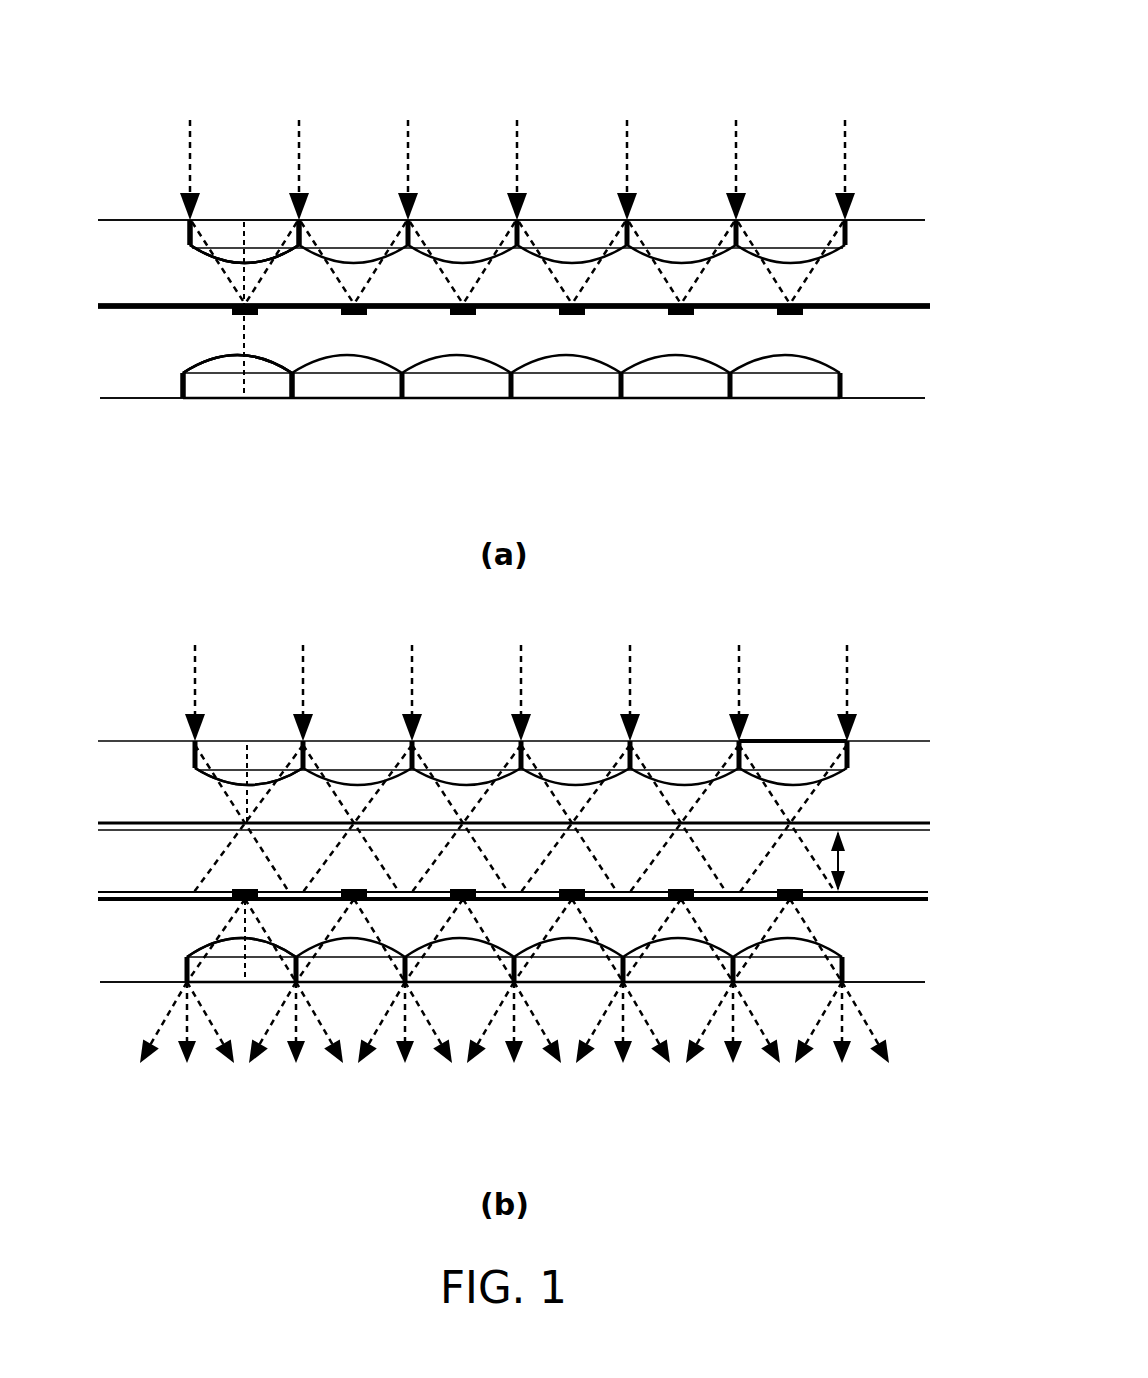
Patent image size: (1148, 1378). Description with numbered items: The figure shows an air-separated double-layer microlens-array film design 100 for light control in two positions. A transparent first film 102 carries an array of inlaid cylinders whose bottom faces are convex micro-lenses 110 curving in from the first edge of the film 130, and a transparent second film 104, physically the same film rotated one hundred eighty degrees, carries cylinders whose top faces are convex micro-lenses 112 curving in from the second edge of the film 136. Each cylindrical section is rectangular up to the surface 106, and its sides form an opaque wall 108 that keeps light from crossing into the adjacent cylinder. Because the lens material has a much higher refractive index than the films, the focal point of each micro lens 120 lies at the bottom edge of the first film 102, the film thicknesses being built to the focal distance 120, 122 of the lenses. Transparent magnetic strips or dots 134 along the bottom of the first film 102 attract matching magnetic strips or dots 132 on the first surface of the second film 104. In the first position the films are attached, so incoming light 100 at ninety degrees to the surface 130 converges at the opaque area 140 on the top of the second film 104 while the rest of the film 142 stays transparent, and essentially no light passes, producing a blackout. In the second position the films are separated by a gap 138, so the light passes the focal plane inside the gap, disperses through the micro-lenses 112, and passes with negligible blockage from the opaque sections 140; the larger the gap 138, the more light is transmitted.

The air-separated double-layer microlens-array film design 100 is at (722, 86).
The first film 102 is at (868, 233).
The second film 104 is at (160, 377).
The surface 106 is at (188, 248).
The opaque wall 108 is at (190, 390).
The convex micro-lens 110 is at (470, 234).
The convex micro-lens 112 is at (470, 375).
The focal point of micro lens 120 is at (247, 246).
The focal distance of second film 122 is at (250, 383).
The first edge of the film 130 is at (150, 214).
The second magnetic material 132 is at (127, 309).
The first magnetic material 134 is at (885, 320).
The second edge of the film 136 is at (860, 400).
The gap 138 is at (840, 852).
The opaque area 140 is at (565, 316).
The transparent rest of the film 142 is at (642, 313).